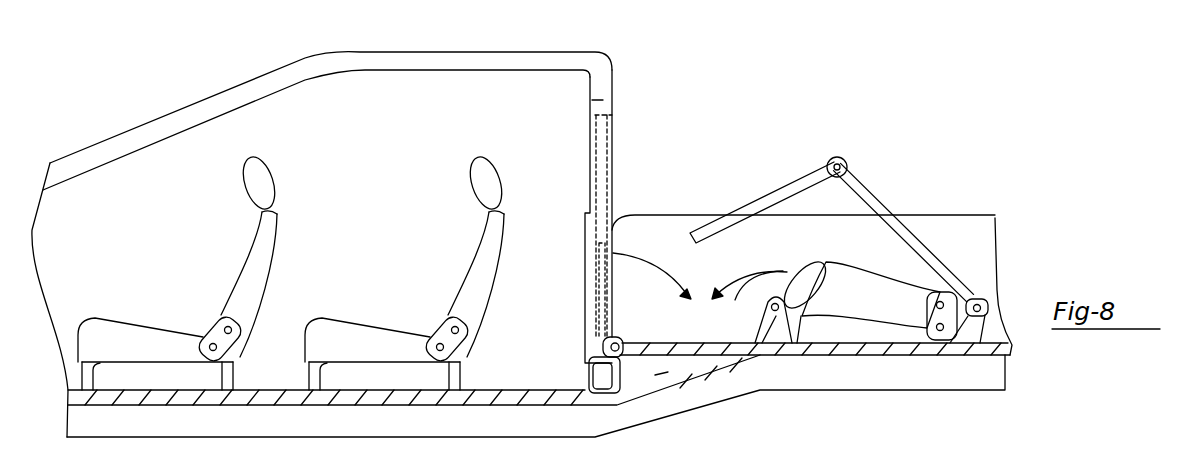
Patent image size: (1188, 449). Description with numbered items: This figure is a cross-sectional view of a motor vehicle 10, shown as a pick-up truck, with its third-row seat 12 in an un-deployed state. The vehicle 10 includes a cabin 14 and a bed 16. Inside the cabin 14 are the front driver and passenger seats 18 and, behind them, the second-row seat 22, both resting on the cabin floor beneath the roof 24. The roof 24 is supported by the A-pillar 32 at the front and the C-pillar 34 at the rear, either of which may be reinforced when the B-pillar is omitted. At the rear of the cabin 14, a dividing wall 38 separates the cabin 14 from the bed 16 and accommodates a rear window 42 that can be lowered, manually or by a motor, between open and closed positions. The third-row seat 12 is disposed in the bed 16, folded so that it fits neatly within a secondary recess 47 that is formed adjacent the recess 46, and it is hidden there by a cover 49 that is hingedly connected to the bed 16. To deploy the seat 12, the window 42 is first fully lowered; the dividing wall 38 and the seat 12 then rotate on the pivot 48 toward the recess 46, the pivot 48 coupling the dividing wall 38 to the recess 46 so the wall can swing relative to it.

The motor vehicle 10 is at (139, 80).
The third-row seat 12 is at (869, 264).
The cabin 14 is at (383, 155).
The bed 16 is at (975, 260).
The front driver and passenger seats 18 is at (226, 268).
The second-row seat 22 is at (452, 268).
The roof 24 is at (526, 52).
The A-pillar 32 is at (181, 112).
The C-pillar 34 is at (603, 100).
The dividing wall 38 is at (610, 317).
The rear window 42 is at (600, 167).
The recess 46 is at (670, 356).
The secondary recess 47 is at (838, 356).
The pivot 48 is at (609, 347).
The cover 49 is at (881, 202).